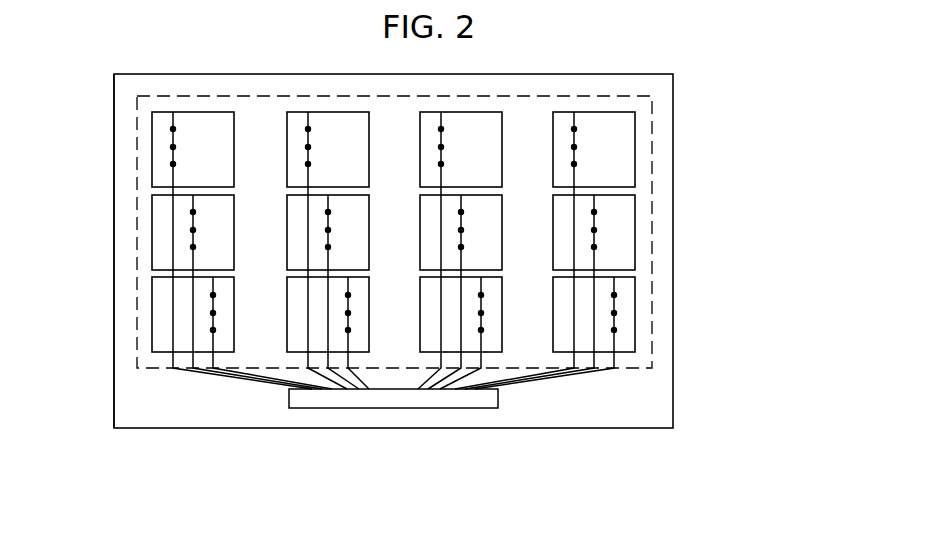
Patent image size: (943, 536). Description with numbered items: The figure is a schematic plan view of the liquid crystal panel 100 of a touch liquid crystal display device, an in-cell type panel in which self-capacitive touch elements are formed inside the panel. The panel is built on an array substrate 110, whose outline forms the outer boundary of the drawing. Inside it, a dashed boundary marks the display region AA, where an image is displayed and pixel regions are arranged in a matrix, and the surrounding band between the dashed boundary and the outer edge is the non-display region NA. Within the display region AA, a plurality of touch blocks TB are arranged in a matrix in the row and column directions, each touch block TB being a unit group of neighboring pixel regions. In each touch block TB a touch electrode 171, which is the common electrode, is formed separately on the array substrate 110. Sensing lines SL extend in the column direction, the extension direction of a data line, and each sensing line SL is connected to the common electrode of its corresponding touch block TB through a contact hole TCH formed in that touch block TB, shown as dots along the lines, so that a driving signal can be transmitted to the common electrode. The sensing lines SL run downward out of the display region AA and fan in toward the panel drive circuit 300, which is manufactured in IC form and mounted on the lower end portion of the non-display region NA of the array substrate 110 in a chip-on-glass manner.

The liquid crystal panel 100 is at (462, 251).
The array substrate 110 is at (673, 398).
The display region AA is at (137, 223).
The non-display region NA is at (127, 270).
The touch block TB is at (471, 232).
The touch electrode 171 is at (636, 156).
The sensing line SL is at (595, 273).
The contact hole TCH is at (596, 212).
The panel drive circuit 300 is at (393, 408).